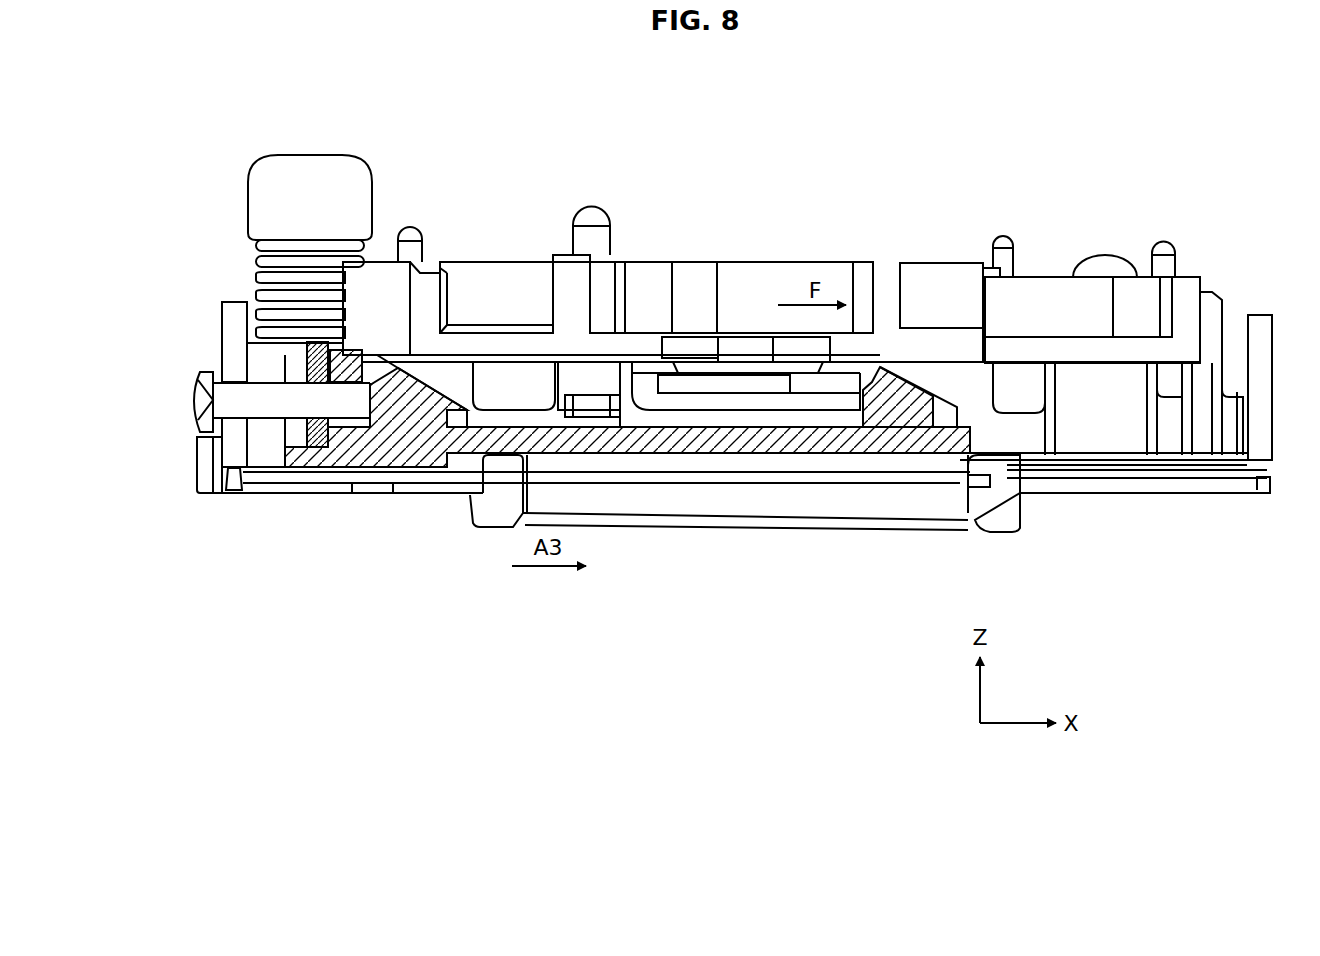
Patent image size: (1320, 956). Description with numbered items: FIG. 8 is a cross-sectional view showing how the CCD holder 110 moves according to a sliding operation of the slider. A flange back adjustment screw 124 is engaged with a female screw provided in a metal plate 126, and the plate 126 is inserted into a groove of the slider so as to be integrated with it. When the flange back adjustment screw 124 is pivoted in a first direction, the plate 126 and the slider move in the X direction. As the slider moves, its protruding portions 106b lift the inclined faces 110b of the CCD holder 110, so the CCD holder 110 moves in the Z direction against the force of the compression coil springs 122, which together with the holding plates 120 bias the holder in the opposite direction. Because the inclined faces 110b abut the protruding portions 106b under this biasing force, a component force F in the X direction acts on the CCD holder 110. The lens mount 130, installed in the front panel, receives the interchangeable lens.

The holding plate 120 is at (306, 162).
The compression coil spring 122 is at (255, 259).
The flange back adjustment screw 124 is at (200, 372).
The plate 126 is at (316, 447).
The protruding portion 106b is at (428, 400).
The CCD holder 110 is at (752, 296).
The inclined face 110b is at (433, 420).
The lens mount 130 is at (497, 530).